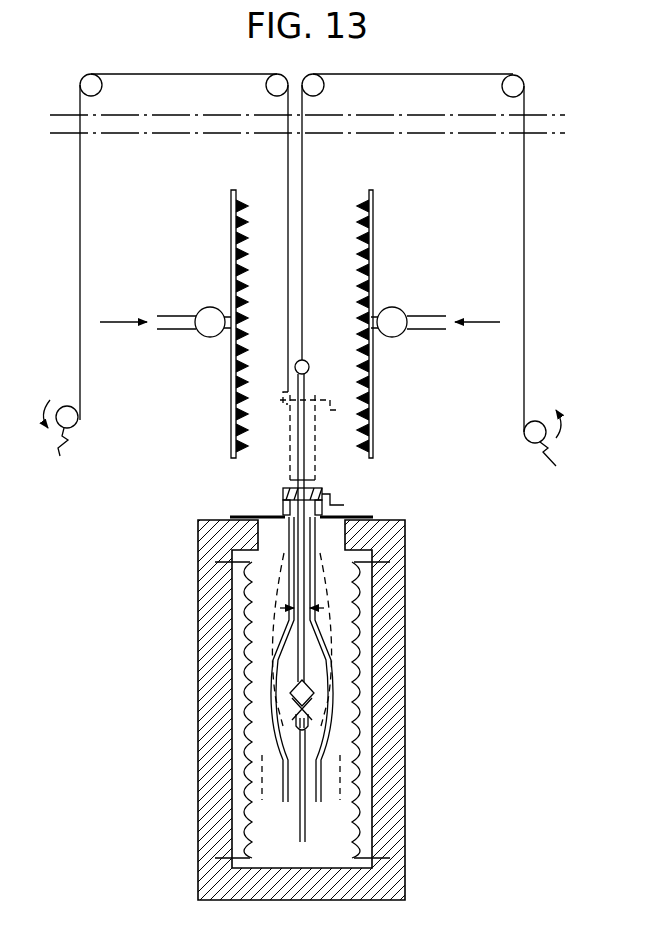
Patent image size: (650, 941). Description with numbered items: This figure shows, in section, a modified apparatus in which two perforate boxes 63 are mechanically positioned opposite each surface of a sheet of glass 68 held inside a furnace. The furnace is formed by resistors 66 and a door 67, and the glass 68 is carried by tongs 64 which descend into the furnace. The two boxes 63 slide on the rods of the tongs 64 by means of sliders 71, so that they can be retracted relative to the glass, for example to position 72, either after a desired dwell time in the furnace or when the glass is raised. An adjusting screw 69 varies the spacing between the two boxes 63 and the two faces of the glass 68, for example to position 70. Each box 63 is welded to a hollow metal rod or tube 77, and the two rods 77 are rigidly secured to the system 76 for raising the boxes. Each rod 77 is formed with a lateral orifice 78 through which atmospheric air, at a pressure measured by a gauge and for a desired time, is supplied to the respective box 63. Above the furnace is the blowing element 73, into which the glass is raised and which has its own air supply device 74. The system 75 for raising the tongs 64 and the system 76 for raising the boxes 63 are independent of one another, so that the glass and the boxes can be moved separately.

The perforate boxes 63 is at (282, 800).
The tongs 64 is at (298, 648).
The resistors 66 is at (358, 725).
The door 67 is at (344, 505).
The glass 68 is at (312, 735).
The adjusting screw 69 is at (283, 495).
The position 70 is at (325, 798).
The sliders 71 is at (306, 483).
The position 72 is at (286, 720).
The blowing element 73 is at (374, 222).
The air supply device 74 is at (395, 317).
The system for raising the tongs 75 is at (425, 75).
The system for raising the perforate boxes 76 is at (181, 75).
The rods 77 is at (324, 738).
The lateral orifice 78 is at (327, 527).